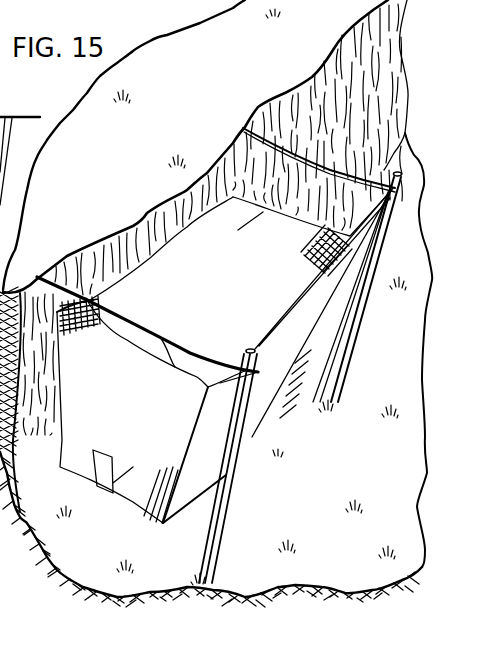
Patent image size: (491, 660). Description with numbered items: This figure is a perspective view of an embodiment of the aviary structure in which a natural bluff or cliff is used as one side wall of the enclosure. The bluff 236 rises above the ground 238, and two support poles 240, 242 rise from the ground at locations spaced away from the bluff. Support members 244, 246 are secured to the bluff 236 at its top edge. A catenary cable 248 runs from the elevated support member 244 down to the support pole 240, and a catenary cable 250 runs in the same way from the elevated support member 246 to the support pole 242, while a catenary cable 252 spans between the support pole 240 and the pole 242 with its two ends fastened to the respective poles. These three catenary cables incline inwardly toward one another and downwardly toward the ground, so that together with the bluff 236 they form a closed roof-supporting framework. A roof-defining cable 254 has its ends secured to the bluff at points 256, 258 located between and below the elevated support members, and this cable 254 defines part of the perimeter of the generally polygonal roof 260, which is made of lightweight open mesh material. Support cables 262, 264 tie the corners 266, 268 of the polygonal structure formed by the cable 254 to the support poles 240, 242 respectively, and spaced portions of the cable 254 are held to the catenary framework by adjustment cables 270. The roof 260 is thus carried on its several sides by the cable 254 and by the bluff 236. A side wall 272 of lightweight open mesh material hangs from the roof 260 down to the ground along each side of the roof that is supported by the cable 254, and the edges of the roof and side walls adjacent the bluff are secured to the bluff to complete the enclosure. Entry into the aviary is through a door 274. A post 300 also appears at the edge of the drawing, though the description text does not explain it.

The anchor post 300 is at (18, 117).
The bluff 236 is at (113, 217).
The ground 238 is at (342, 471).
The support pole 240 is at (236, 503).
The support pole 242 is at (355, 327).
The support member 244 is at (37, 277).
The support member 246 is at (243, 133).
The catenary cable 248 is at (185, 348).
The catenary cable 250 is at (231, 150).
The catenary cable 252 is at (302, 327).
The cable 254 is at (130, 357).
The point 256 is at (125, 409).
The point 258 is at (250, 193).
The roof 260 is at (237, 280).
The support cable 262 is at (228, 390).
The support cable 264 is at (368, 223).
The corner 266 is at (207, 373).
The corner 268 is at (311, 250).
The adjustment cables 270 is at (150, 344).
The side wall 272 is at (77, 403).
The door 274 is at (113, 472).